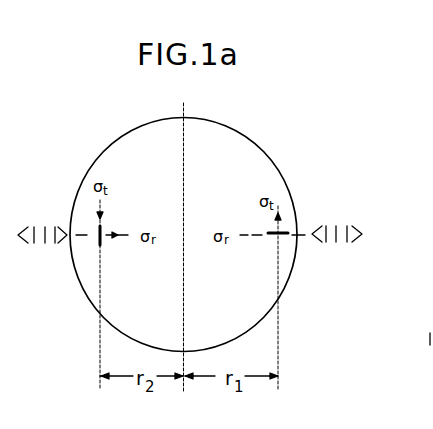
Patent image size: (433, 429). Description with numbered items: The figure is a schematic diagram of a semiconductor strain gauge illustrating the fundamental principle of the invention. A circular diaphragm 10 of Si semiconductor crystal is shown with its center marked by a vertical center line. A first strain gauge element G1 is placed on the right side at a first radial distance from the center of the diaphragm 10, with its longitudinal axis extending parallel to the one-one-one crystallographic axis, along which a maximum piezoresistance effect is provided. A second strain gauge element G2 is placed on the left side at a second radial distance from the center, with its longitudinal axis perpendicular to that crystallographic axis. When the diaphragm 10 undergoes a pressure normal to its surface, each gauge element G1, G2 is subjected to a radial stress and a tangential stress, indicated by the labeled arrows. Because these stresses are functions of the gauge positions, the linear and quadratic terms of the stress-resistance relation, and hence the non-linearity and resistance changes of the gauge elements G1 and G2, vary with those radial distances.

The diaphragm 10 is at (258, 148).
The strain gauge element G1 is at (288, 229).
The strain gauge element G2 is at (98, 230).